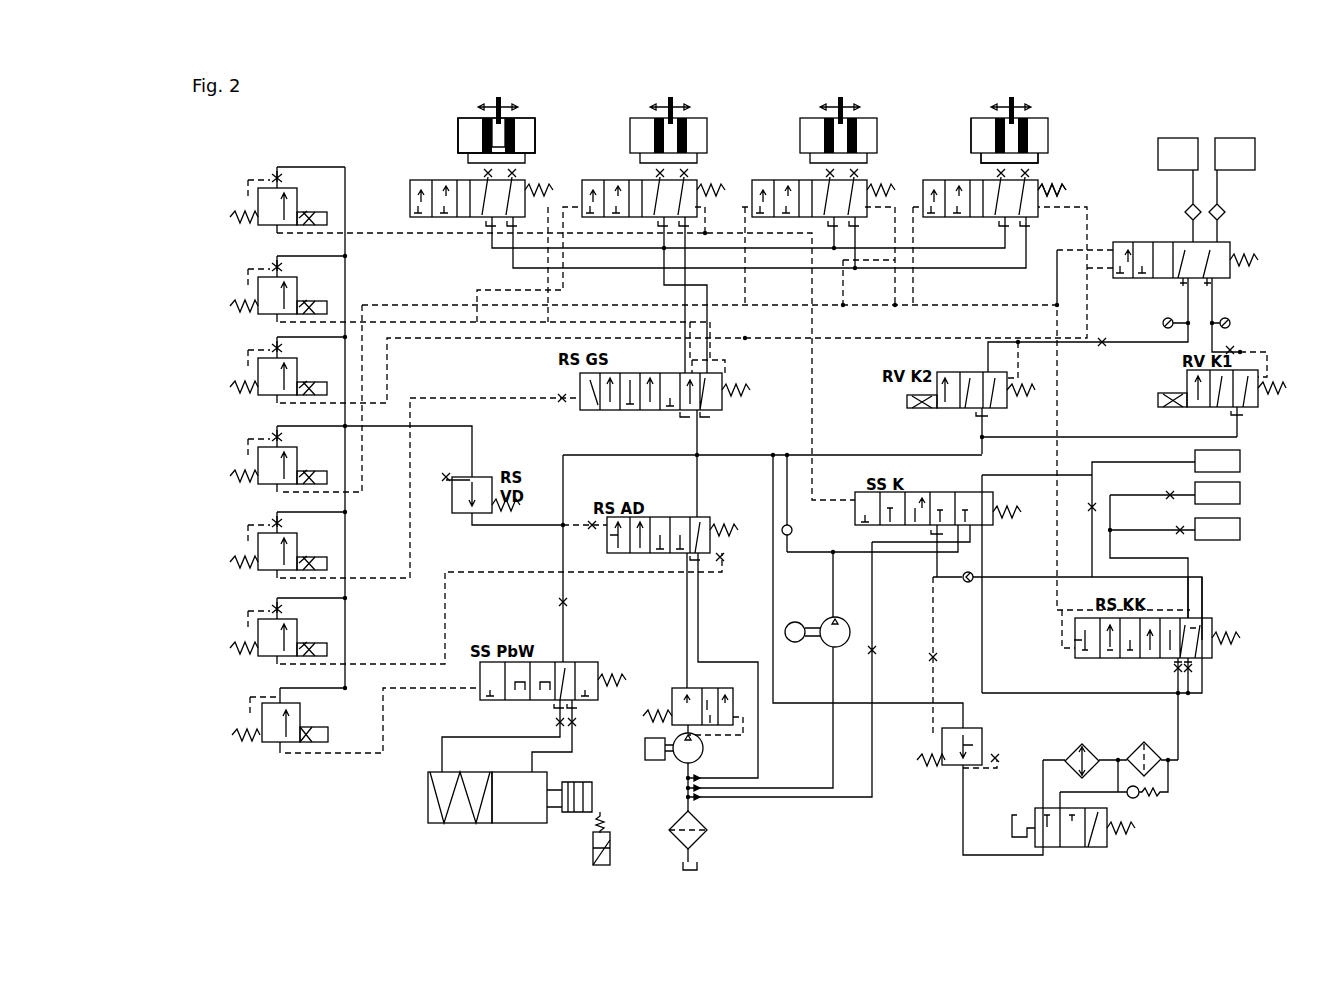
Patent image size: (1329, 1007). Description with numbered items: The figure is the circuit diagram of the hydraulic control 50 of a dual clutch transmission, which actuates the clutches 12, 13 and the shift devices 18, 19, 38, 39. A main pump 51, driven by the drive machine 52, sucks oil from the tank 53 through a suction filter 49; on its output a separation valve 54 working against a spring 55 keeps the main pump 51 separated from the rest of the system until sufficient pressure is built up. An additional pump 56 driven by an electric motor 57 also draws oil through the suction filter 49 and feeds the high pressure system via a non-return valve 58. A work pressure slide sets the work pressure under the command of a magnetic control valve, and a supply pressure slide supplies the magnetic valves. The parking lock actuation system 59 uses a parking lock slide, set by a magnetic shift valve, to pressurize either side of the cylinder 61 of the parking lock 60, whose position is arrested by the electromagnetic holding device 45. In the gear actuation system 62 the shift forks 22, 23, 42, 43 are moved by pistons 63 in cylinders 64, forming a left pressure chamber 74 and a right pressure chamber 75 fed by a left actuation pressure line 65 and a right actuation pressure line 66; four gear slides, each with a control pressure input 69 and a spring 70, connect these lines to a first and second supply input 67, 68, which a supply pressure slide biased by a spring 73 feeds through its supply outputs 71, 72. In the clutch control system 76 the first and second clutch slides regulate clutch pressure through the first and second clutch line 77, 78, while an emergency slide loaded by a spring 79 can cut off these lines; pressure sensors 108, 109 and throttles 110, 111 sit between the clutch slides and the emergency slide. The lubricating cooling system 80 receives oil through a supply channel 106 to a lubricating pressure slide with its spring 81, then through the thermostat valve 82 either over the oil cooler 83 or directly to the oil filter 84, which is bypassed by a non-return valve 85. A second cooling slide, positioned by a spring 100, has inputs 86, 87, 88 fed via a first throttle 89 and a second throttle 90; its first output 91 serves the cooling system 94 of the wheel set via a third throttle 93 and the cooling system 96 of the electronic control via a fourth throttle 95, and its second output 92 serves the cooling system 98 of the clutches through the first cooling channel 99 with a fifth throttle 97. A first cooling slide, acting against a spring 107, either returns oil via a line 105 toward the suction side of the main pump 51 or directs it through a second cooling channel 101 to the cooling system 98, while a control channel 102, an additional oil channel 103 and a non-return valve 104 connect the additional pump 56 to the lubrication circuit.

The first clutch 12 is at (1232, 190).
The second clutch 13 is at (1179, 190).
The first shift device 18 is at (447, 138).
The second shift device 19 is at (618, 115).
The shift fork 22 is at (500, 100).
The shift fork 23 is at (671, 100).
The third shift device 38 is at (792, 112).
The fourth shift device 39 is at (958, 110).
The shift fork 42 is at (841, 100).
The shift fork 43 is at (1012, 98).
The holding device 45 is at (593, 846).
The suction filter 49 is at (708, 828).
The hydraulic control 50 is at (323, 133).
The main pump 51 is at (675, 758).
The drive machine 52 is at (655, 760).
The tank 53 is at (700, 866).
The separation valve 54 is at (686, 688).
The spring 55 is at (651, 712).
The additional pump 56 is at (827, 617).
The electric motor 57 is at (793, 643).
The non-return valve 58 is at (785, 522).
The parking lock actuation system 59 is at (350, 797).
The parking lock 60 is at (557, 830).
The cylinder 61 is at (520, 823).
The gear actuation system 62 is at (390, 140).
The piston 63 is at (514, 137).
The cylinder 64 is at (534, 148).
The left actuation pressure line 65 is at (977, 160).
The right actuation pressure line 66 is at (1038, 160).
The first supply input 67 is at (1005, 242).
The second supply input 68 is at (1026, 242).
The control pressure input 69 is at (913, 207).
The spring 70 is at (1063, 185).
The supply output 71 is at (708, 343).
The supply output 72 is at (683, 343).
The spring 73 is at (741, 399).
The left pressure chamber 74 is at (467, 132).
The right pressure chamber 75 is at (527, 127).
The clutch control system 76 is at (1275, 220).
The first clutch line 77 is at (1214, 310).
The second clutch line 78 is at (1182, 293).
The spring 79 is at (1247, 260).
The lubricating cooling system 80 is at (1205, 795).
The spring 81 is at (942, 758).
The thermostat valve 82 is at (1093, 847).
The oil cooler 83 is at (1080, 745).
The oil filter 84 is at (1147, 742).
The non-return valve 85 is at (1140, 796).
The first input 86 is at (1172, 658).
The second input 87 is at (1193, 661).
The third input 88 is at (1203, 658).
The first throttle 89 is at (1176, 670).
The second throttle 90 is at (1192, 674).
The first output 91 is at (1188, 600).
The second output 92 is at (1202, 593).
The third throttle 93 is at (1181, 531).
The cooling system of wheel set 94 is at (1175, 529).
The fourth throttle 95 is at (1170, 495).
The cooling system of electronic control 96 is at (1175, 493).
The fifth throttle 97 is at (1092, 507).
The cooling system of clutches 98 is at (1166, 462).
The first cooling channel 99 is at (1092, 560).
The spring 100 is at (1243, 645).
The second cooling channel 101 is at (1027, 475).
The control channel 102 is at (933, 646).
The additional oil channel 103 is at (1010, 578).
The non-return valve 104 is at (973, 577).
The line 105 is at (840, 798).
The supply channel 106 is at (903, 700).
The spring 107 is at (1010, 517).
The pressure sensor 108 is at (1230, 323).
The pressure sensor 109 is at (1163, 323).
The throttle 110 is at (1240, 350).
The throttle 111 is at (1102, 346).